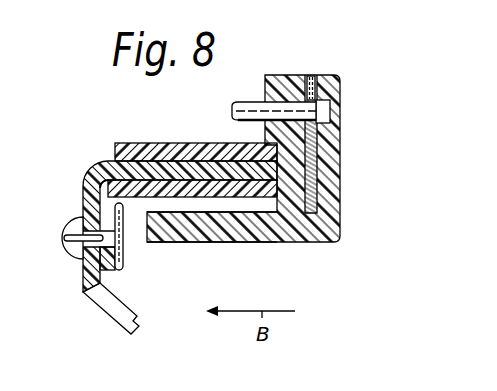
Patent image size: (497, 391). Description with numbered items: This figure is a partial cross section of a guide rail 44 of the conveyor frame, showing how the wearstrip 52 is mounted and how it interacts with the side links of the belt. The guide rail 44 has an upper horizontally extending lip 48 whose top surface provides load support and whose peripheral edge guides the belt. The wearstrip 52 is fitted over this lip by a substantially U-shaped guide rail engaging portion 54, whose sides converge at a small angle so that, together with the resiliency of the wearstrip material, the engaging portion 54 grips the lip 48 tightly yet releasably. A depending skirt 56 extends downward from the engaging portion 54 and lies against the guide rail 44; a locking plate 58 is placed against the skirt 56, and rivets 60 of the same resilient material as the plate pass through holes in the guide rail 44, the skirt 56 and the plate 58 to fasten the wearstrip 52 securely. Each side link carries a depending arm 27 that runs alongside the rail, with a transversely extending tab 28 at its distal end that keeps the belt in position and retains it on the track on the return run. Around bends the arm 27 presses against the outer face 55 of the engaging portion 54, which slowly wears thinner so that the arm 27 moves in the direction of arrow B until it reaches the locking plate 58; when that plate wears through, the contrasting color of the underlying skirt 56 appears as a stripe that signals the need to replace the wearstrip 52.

The depending arm 27 is at (341, 86).
The transversely extending tab 28 is at (220, 242).
The guide rail 44 is at (101, 309).
The upper horizontally extending lip 48 is at (106, 162).
The wearstrip 52 is at (136, 136).
The guide rail engaging portion 54 is at (196, 143).
The outer face 55 is at (270, 165).
The depending skirt 56 is at (117, 203).
The locking plate 58 is at (120, 271).
The rivet 60 is at (78, 258).